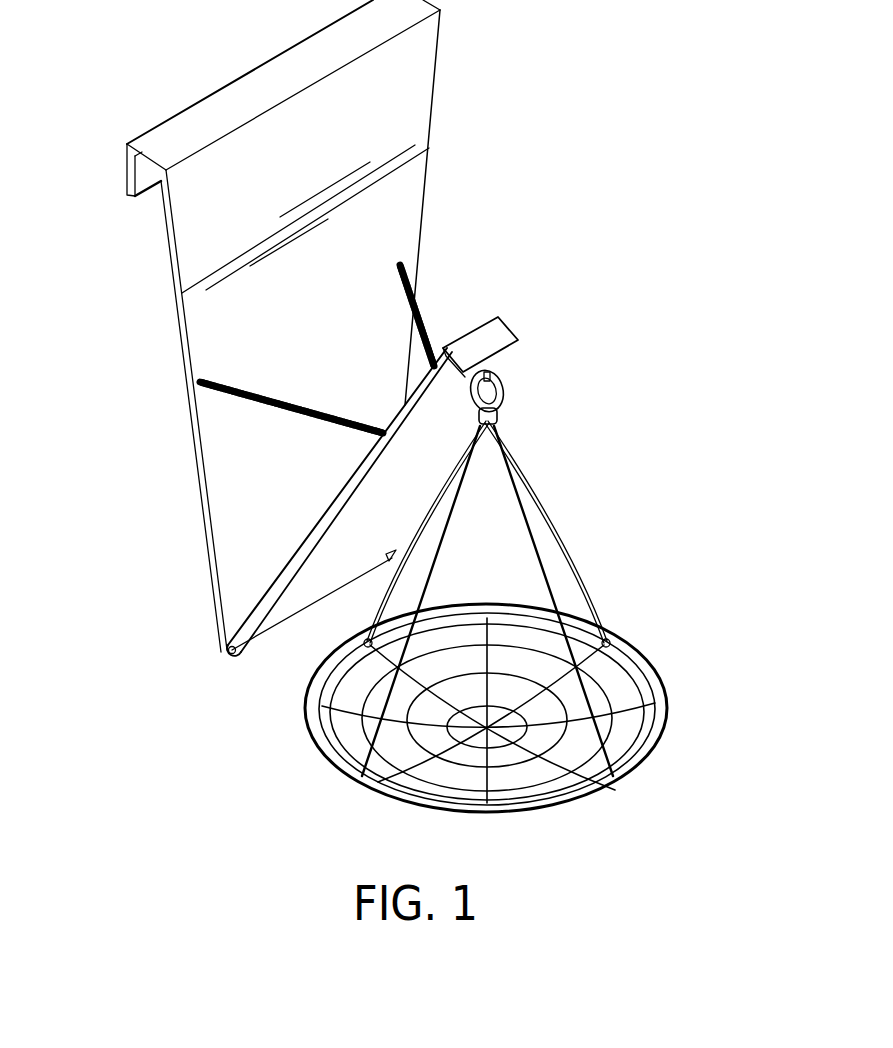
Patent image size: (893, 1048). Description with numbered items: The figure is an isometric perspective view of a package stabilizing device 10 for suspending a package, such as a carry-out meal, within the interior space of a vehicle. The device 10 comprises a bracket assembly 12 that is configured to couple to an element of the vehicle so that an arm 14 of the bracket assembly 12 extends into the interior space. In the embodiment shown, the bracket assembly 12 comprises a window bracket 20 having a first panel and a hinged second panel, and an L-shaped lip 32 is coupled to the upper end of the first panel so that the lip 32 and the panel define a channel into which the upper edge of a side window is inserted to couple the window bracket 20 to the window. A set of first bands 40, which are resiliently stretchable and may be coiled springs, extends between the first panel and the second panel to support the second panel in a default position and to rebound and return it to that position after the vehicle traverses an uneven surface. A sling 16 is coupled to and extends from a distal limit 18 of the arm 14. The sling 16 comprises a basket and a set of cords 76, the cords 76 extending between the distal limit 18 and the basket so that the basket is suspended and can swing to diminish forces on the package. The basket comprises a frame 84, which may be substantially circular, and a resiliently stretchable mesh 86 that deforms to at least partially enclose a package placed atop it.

The package stabilizing device 10 is at (668, 106).
The bracket assembly 12 is at (468, 334).
The arm 14 is at (422, 442).
The sling 16 is at (655, 668).
The distal limit 18 is at (519, 349).
The window bracket 20 is at (203, 513).
The lip 32 is at (178, 132).
The first bands 40 is at (403, 297).
The cords 76 is at (538, 553).
The frame 84 is at (613, 781).
The mesh 86 is at (523, 735).